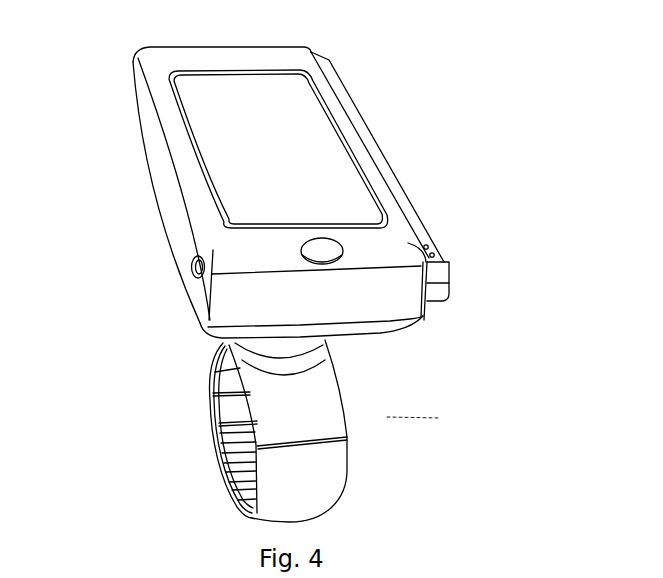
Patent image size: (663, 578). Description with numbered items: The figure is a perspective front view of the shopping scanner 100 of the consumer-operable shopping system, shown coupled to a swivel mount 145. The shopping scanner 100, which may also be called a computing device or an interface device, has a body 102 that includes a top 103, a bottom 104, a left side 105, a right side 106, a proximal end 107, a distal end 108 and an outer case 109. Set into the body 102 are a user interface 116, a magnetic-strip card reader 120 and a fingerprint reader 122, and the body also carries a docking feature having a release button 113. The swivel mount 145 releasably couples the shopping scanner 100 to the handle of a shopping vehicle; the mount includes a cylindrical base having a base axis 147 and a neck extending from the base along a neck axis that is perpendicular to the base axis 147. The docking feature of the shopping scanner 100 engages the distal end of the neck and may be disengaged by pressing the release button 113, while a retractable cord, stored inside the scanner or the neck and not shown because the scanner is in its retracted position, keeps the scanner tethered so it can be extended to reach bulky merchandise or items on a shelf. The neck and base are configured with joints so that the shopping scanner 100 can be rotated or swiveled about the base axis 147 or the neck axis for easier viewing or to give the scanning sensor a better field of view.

The shopping scanner 100 is at (153, 56).
The body 102 is at (154, 87).
The top 103 is at (300, 55).
The bottom 104 is at (157, 200).
The left side 105 is at (150, 118).
The right side 106 is at (405, 218).
The proximal end 107 is at (386, 298).
The distal end 108 is at (199, 47).
The outer case 109 is at (370, 308).
The release button 113 is at (194, 268).
The user interface 116 is at (332, 162).
The magnetic-strip card reader 120 is at (446, 266).
The fingerprint reader 122 is at (322, 249).
The swivel mount 145 is at (323, 410).
The base axis 147 is at (207, 433).